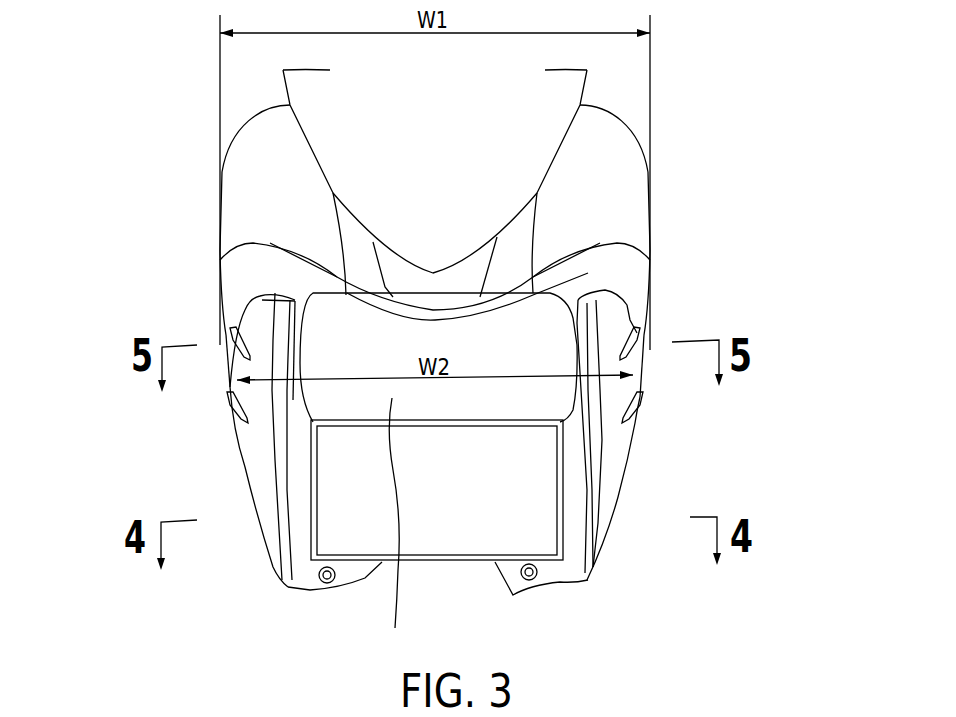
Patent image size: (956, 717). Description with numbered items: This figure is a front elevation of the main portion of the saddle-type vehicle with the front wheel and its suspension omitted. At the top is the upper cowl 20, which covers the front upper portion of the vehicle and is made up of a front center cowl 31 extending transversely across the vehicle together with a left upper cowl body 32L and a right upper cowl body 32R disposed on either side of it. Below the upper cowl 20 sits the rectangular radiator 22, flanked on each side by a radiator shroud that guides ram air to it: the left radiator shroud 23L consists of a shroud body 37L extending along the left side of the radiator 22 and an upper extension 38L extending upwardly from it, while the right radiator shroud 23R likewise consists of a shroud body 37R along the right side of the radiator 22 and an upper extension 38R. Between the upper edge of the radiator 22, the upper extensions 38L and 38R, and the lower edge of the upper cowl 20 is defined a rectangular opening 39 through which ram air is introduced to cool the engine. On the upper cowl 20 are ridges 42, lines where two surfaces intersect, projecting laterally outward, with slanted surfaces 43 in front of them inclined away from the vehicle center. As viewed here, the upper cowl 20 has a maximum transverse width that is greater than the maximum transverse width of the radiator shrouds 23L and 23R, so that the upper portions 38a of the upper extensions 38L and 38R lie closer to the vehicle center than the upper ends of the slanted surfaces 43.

The upper cowl 20 is at (690, 182).
The front center cowl 31 is at (462, 282).
The right upper cowl body 32R is at (247, 185).
The left upper cowl body 32L is at (627, 181).
The ridges 42 is at (233, 243).
The slanted surfaces 43 is at (237, 315).
The upper portions 38a is at (233, 367).
The upper extension 38R is at (247, 370).
The upper extension 38L is at (628, 360).
The shroud body 37R is at (263, 497).
The shroud body 37L is at (612, 475).
The right radiator shroud 23R is at (206, 441).
The left radiator shroud 23L is at (669, 442).
The rectangular opening 39 is at (438, 474).
The radiator 22 is at (433, 535).